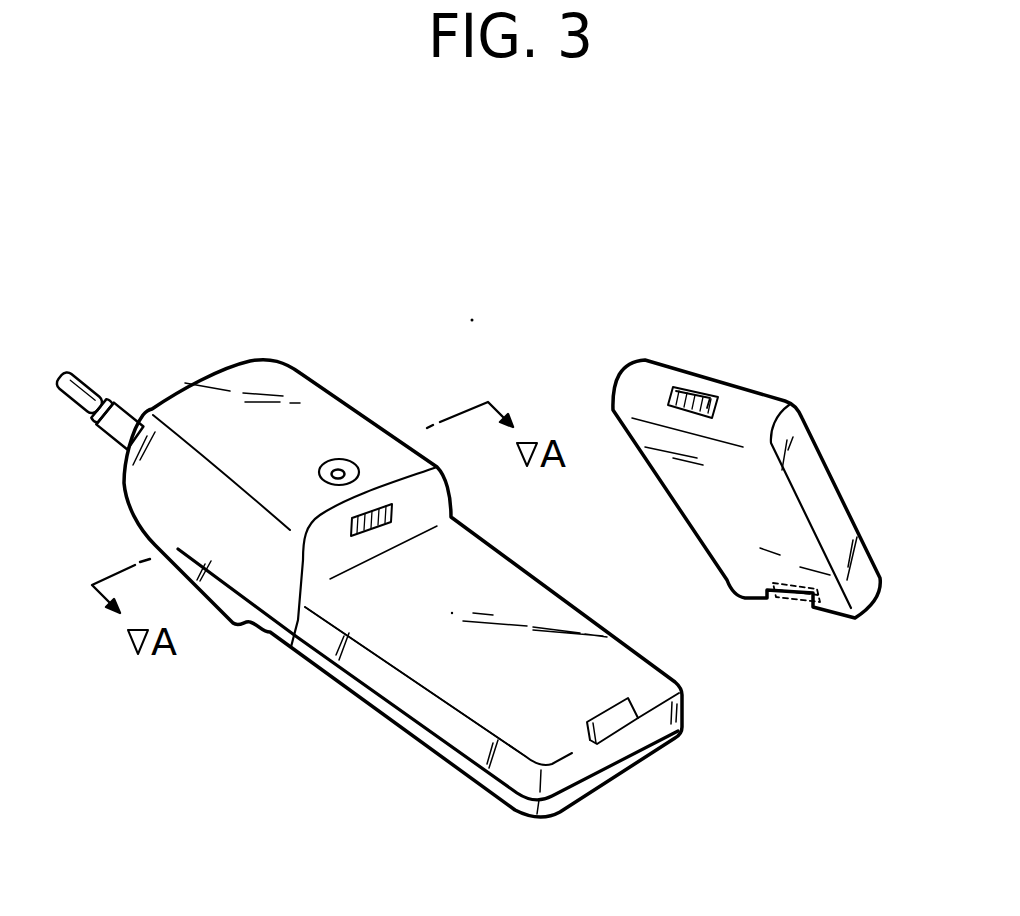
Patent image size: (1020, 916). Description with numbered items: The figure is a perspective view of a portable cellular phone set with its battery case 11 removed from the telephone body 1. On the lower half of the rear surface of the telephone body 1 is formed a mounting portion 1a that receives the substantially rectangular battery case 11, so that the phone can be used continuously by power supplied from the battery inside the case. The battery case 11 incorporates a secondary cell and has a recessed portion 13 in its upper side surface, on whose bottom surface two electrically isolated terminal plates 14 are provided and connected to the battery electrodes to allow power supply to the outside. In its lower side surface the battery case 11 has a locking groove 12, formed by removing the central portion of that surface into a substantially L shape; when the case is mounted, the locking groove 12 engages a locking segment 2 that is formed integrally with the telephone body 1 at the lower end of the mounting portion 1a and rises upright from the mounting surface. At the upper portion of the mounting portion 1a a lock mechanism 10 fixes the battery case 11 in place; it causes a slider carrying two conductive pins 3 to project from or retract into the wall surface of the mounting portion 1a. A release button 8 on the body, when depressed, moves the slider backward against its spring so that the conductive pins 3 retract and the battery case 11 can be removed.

The telephone body 1 is at (336, 322).
The mounting portion 1a is at (520, 600).
The locking segment 2 is at (587, 722).
The conductive pins 3 is at (380, 530).
The release button 8 is at (343, 458).
The lock mechanism 10 is at (405, 513).
The battery case 11 is at (791, 362).
The locking groove 12 is at (787, 610).
The recessed portion 13 is at (710, 397).
The terminal plates 14 is at (683, 387).